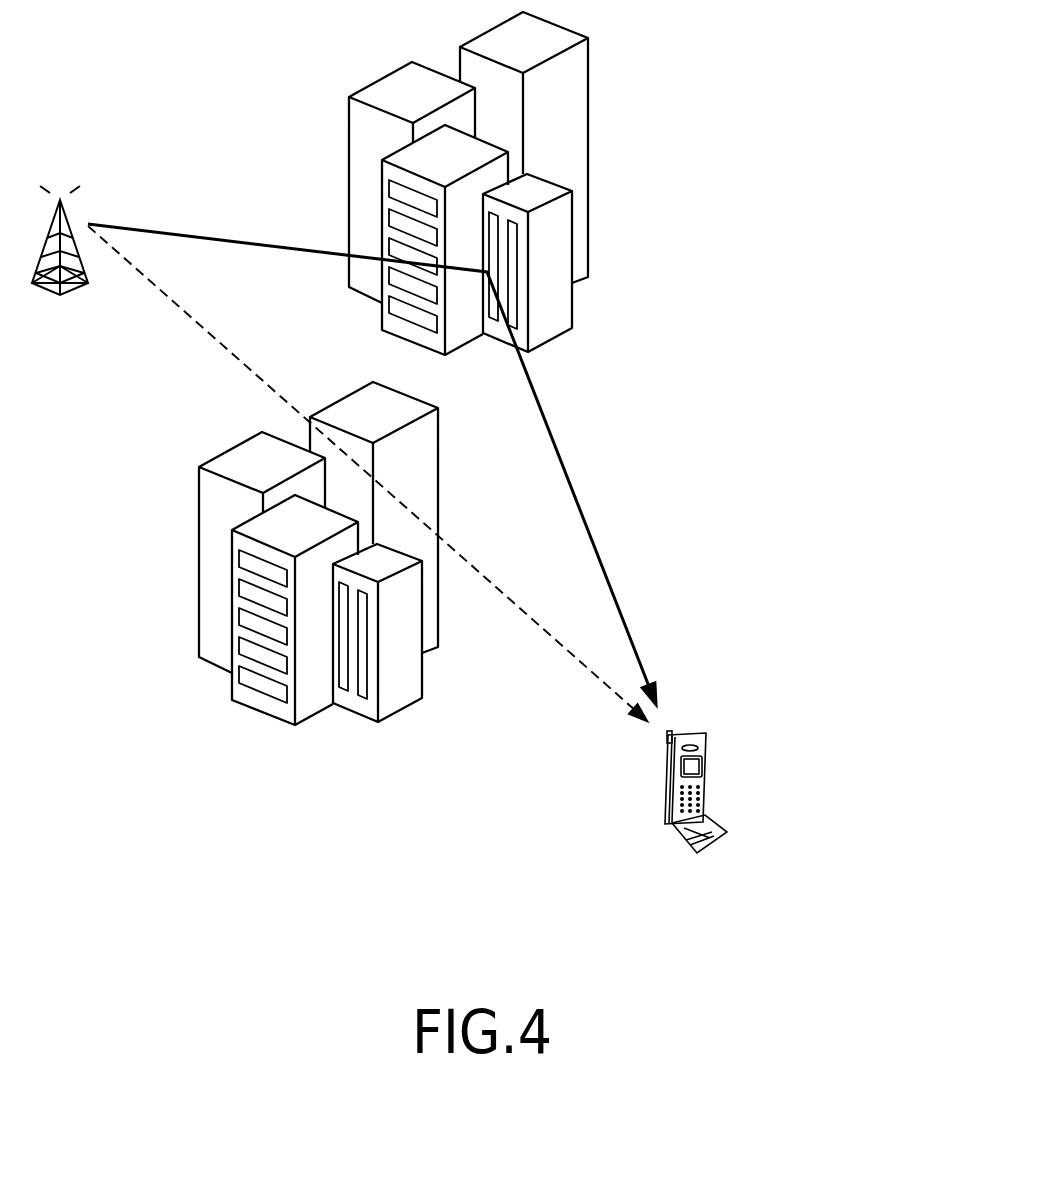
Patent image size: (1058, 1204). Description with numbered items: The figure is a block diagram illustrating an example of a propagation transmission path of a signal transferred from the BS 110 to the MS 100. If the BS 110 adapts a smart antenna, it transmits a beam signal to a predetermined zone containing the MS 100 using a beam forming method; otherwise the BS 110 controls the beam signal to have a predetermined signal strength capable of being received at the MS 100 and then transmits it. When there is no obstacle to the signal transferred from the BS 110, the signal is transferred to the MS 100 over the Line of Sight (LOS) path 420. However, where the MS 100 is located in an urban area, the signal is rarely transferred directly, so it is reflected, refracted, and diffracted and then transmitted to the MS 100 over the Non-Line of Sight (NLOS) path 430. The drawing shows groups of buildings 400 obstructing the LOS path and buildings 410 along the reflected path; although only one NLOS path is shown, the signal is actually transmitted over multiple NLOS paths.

The base station (BS) 110 is at (60, 196).
The mobile station (MS) 100 is at (695, 730).
The reflecting buildings 410 is at (589, 158).
The LOS obstruction(s) 400 is at (197, 563).
The Line of Sight (LOS) path 420 is at (355, 474).
The Non-Line of Sight (NLOS) path 430 is at (500, 465).